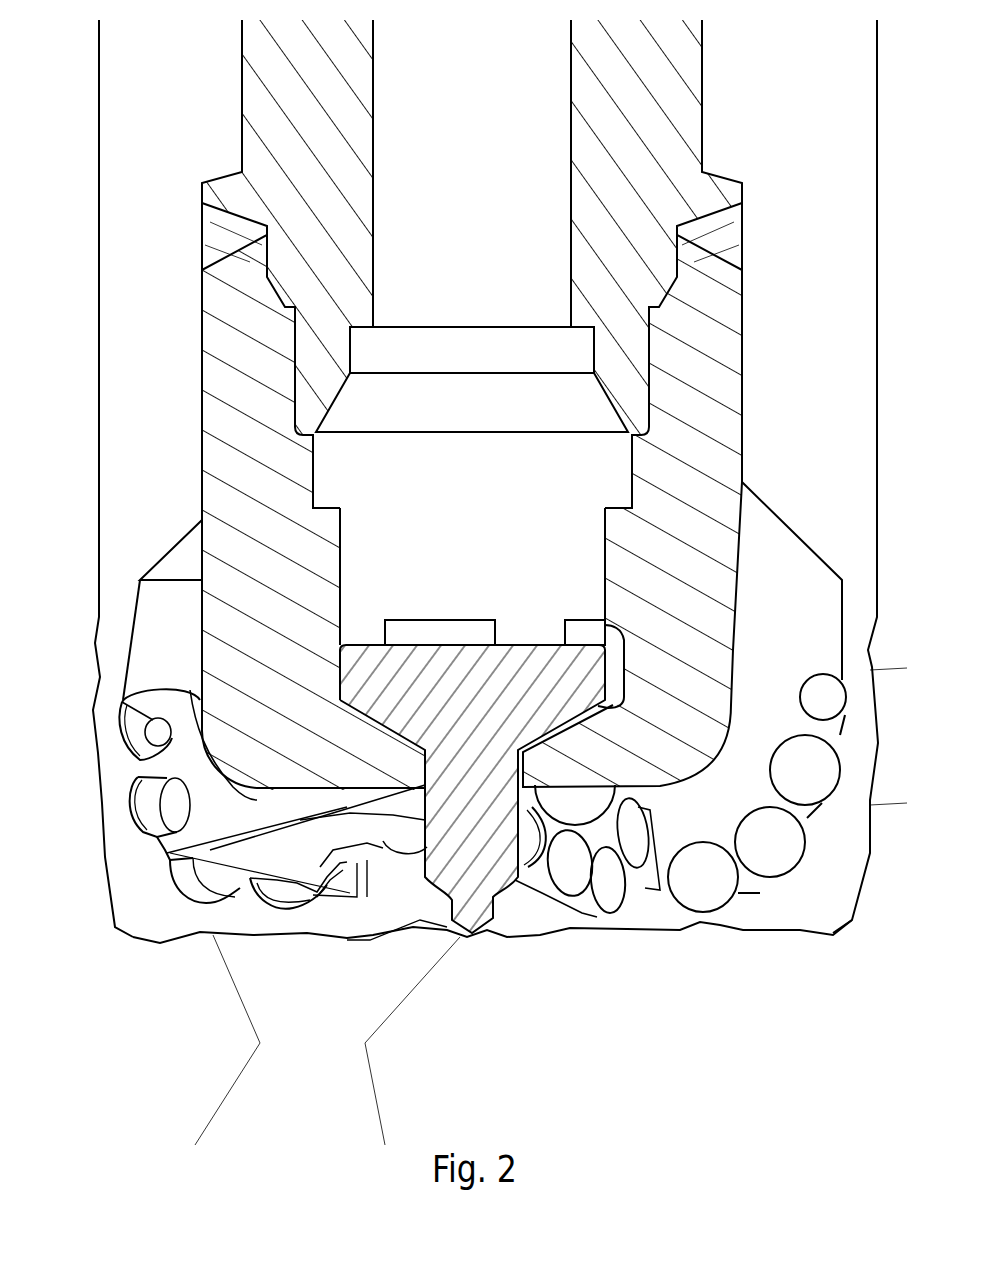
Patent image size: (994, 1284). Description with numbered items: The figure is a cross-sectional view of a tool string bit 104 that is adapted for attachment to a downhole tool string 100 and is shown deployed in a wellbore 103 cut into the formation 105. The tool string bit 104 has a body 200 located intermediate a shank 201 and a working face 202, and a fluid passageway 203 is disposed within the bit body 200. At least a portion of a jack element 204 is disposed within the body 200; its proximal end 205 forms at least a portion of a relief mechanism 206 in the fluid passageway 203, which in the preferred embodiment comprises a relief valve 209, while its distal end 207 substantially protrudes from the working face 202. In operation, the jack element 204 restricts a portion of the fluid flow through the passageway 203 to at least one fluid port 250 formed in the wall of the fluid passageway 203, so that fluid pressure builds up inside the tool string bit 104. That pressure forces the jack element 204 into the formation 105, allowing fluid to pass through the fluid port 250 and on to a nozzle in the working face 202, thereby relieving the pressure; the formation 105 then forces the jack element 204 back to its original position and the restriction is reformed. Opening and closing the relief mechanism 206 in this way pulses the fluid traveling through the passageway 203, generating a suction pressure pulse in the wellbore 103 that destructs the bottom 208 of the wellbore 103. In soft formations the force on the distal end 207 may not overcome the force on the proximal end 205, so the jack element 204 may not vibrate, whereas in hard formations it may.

The downhole tool string 100 is at (148, 116).
The wellbore 103 is at (817, 123).
The tool string bit 104 is at (170, 428).
The formation 105 is at (558, 1046).
The body 200 is at (764, 402).
The shank 201 is at (720, 61).
The working face 202 is at (728, 922).
The fluid passageway 203 is at (308, 347).
The jack element 204 is at (210, 850).
The proximal end 205 is at (532, 622).
The relief mechanism 206 is at (307, 598).
The distal end 207 is at (478, 931).
The bottom 208 is at (420, 920).
The relief valve 209 is at (632, 643).
The fluid port 250 is at (587, 630).